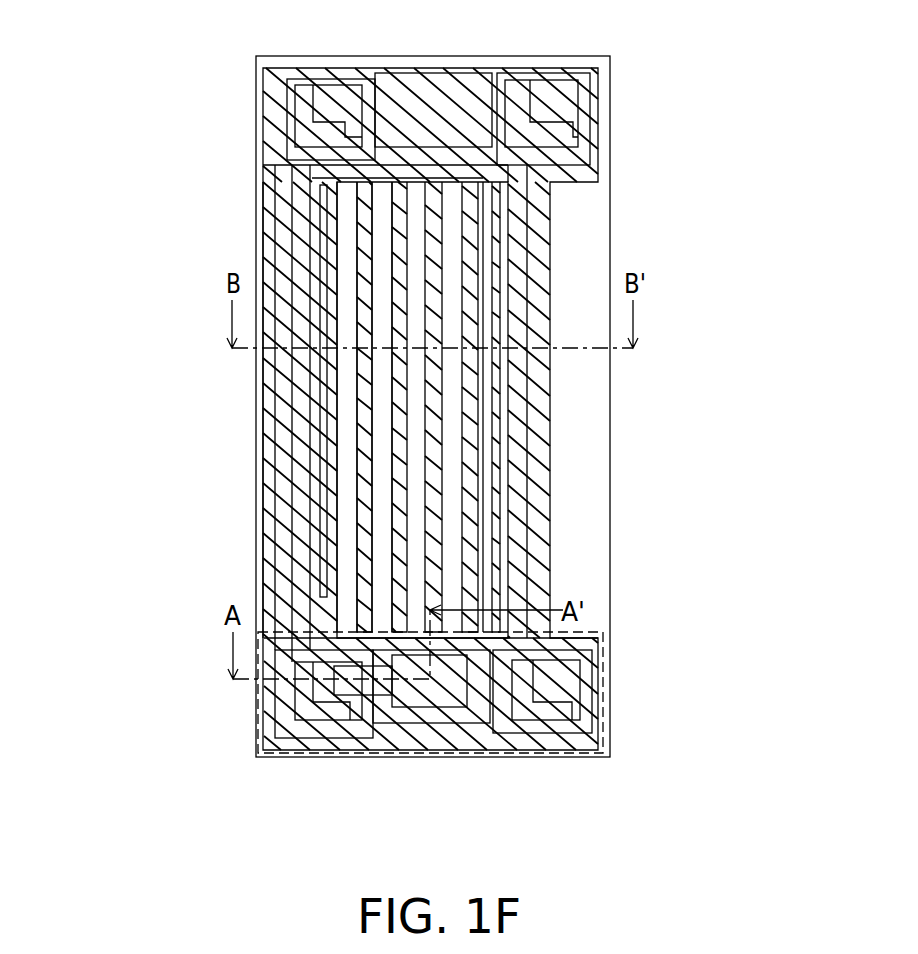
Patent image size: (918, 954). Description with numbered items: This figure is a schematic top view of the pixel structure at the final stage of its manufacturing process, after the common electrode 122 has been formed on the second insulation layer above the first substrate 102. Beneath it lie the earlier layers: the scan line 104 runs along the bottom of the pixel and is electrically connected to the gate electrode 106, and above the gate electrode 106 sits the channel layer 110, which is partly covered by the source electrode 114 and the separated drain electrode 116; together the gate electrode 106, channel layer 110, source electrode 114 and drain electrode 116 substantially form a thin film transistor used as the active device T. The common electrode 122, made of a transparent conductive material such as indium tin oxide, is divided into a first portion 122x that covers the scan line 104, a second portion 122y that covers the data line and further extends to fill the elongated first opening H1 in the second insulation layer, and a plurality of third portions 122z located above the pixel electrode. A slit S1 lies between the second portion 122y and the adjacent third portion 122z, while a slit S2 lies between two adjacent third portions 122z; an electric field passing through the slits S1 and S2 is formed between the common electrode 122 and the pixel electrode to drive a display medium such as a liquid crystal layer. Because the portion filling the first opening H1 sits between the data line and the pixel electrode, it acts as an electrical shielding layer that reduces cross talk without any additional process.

The first substrate 102 is at (595, 465).
The scan line 104 is at (480, 757).
The gate electrode 106 is at (270, 714).
The channel layer 110 is at (353, 742).
The source electrode 114 is at (305, 750).
The drain electrode 116 is at (431, 731).
The common electrode 122 is at (317, 433).
The first portion 122x is at (357, 723).
The second portion 122y is at (226, 404).
The third portions 122z is at (357, 322).
The first opening H1 is at (304, 198).
The slit S1 is at (347, 200).
The slit S2 is at (386, 199).
The active device T is at (365, 755).